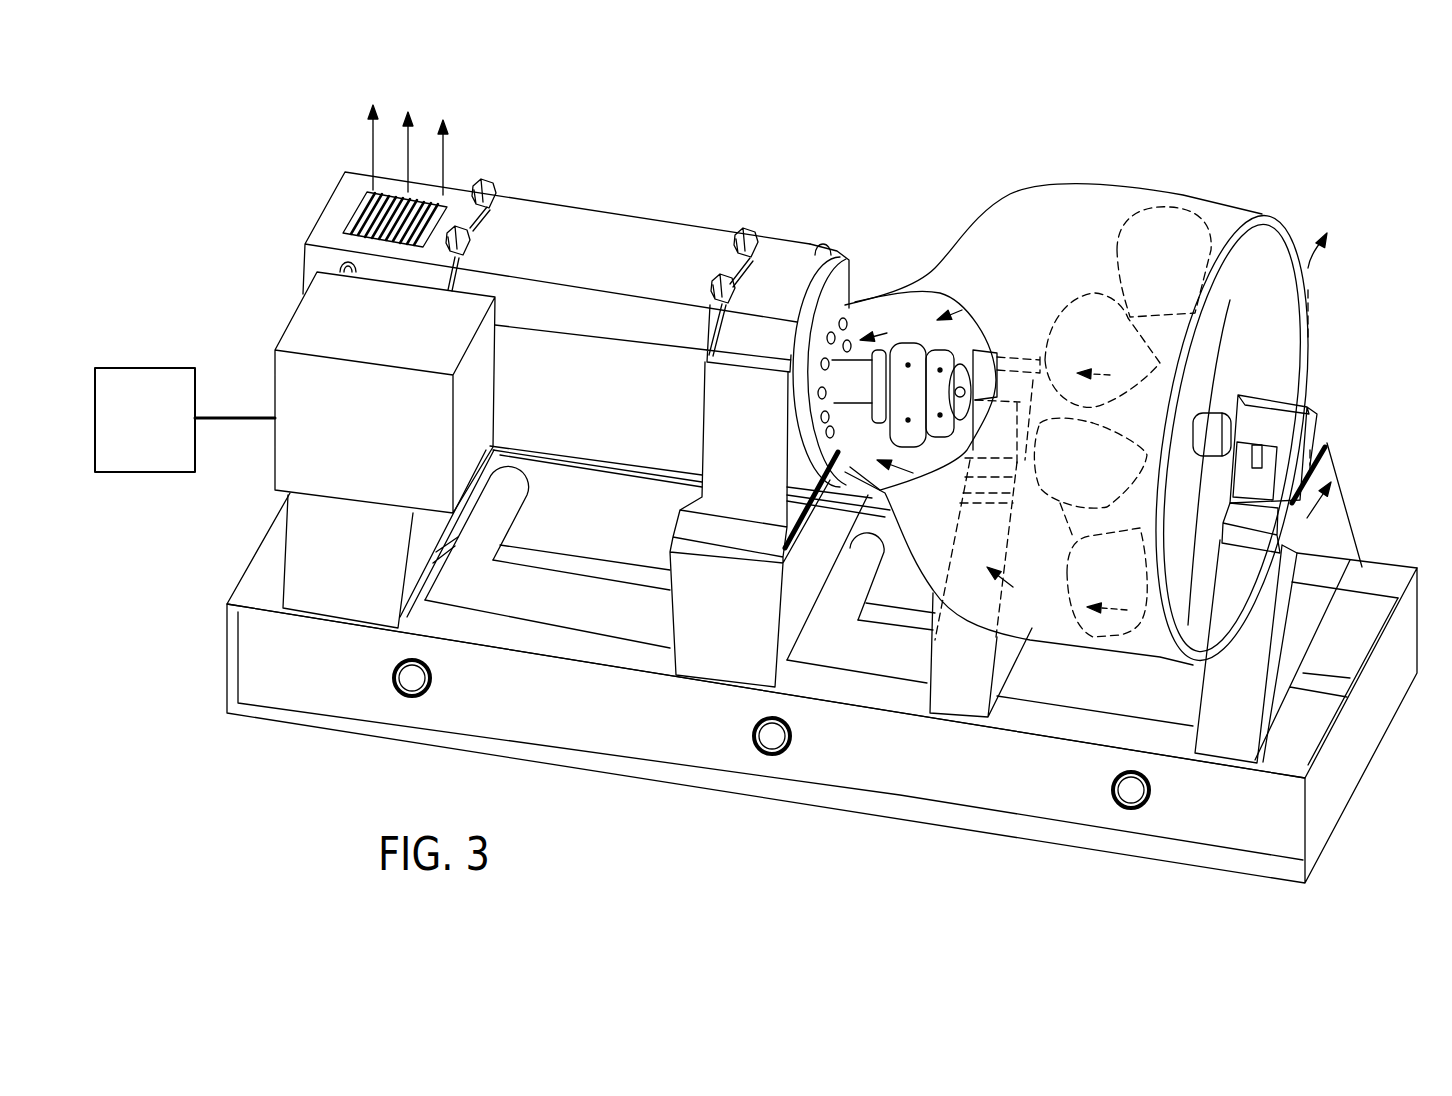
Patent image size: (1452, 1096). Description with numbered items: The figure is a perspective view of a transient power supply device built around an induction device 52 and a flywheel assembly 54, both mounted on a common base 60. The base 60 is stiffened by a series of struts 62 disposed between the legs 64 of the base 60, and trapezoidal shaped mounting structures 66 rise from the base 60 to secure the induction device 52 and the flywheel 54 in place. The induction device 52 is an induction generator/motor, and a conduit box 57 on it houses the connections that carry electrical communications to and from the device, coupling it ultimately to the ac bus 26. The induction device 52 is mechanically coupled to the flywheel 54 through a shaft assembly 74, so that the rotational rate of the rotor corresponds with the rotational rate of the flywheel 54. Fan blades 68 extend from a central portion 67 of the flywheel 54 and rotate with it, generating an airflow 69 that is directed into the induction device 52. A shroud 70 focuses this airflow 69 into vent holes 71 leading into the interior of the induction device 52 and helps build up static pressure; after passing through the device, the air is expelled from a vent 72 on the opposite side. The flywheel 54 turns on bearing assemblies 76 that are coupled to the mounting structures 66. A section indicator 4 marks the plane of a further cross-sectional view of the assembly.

The section line 4- 4 is at (1311, 394).
The ac bus 26 is at (168, 367).
The induction device 52 is at (586, 295).
The flywheel assembly 54 is at (1102, 371).
The conduit box 57 is at (280, 347).
The base 60 is at (352, 698).
The struts 62 is at (477, 560).
The legs 64 is at (880, 770).
The mounting structures 66 is at (312, 518).
The central portion 67 is at (1217, 367).
The fan blades 68 is at (1185, 207).
The airflow 69 is at (447, 172).
The shroud 70 is at (1085, 203).
The vent holes 71 is at (852, 318).
The vent 72 is at (350, 212).
The shaft assembly 74 is at (898, 330).
The bearing assemblies 76 is at (1300, 397).